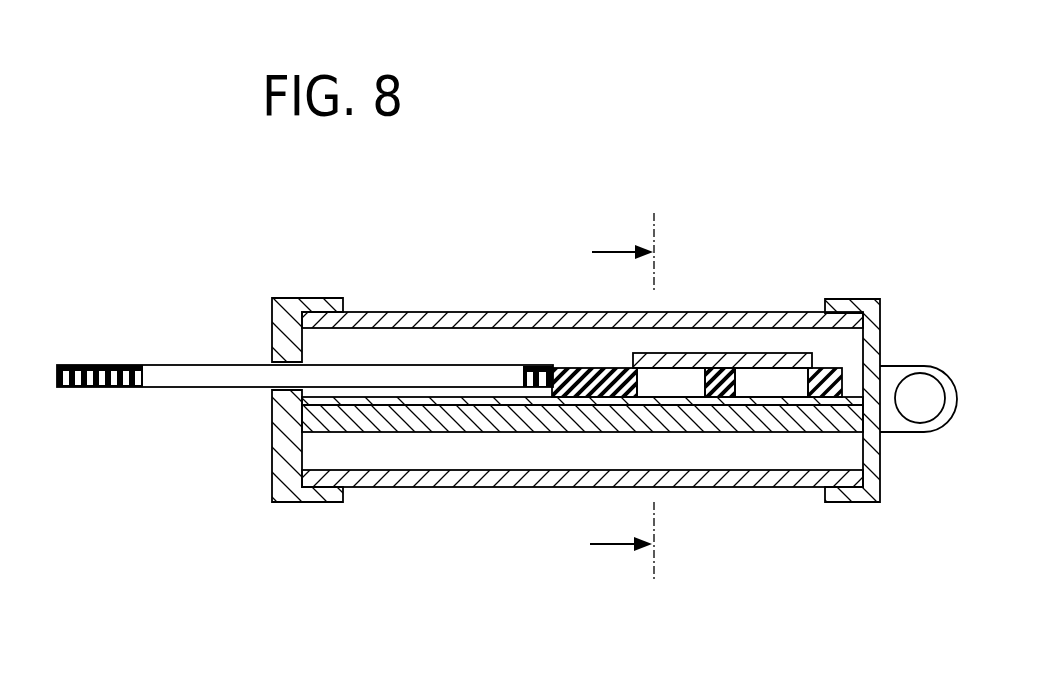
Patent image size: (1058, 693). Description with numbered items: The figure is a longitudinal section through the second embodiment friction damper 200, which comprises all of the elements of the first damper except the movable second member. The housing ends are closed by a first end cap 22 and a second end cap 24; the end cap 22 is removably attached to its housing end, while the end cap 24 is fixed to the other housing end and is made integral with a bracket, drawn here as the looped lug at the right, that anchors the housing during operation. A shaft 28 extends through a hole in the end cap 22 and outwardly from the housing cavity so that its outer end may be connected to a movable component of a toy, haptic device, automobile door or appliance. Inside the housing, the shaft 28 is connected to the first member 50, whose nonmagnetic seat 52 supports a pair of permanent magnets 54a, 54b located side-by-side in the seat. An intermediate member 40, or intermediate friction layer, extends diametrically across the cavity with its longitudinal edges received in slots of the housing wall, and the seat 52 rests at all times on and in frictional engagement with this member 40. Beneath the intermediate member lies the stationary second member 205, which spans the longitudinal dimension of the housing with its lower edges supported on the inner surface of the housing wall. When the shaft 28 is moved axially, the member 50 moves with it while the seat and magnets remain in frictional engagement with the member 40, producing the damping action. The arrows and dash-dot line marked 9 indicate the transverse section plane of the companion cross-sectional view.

The second embodiment friction damper 200 is at (521, 280).
The first end cap 22 is at (298, 298).
The second end cap 24 is at (852, 305).
The shaft 28 is at (195, 365).
The first member 50 is at (533, 344).
The permanent magnet 54a is at (670, 378).
The permanent magnet 54b is at (763, 382).
The nonmagnetic seat 52 is at (825, 380).
The intermediate member 40 is at (510, 400).
The stationary second member 205 is at (722, 422).
The section line 9- 9 is at (636, 396).